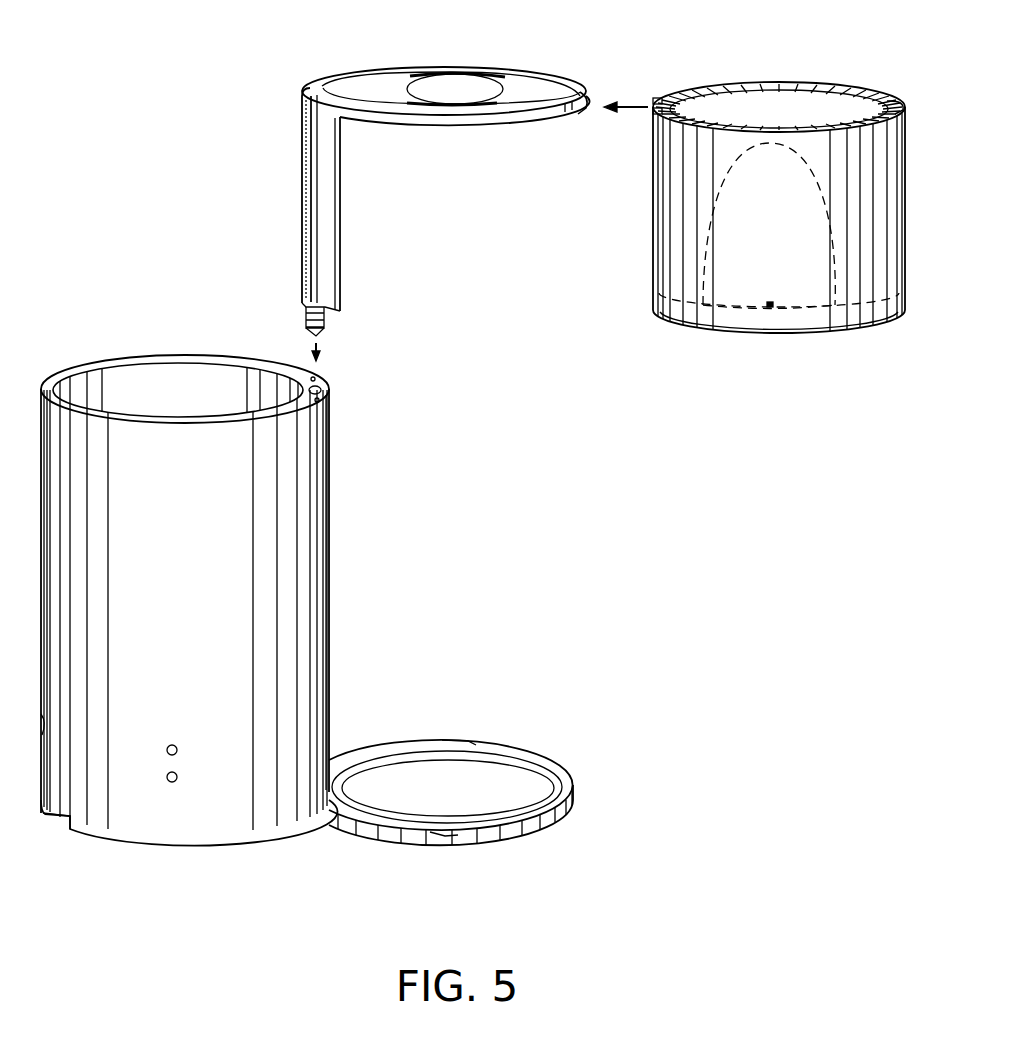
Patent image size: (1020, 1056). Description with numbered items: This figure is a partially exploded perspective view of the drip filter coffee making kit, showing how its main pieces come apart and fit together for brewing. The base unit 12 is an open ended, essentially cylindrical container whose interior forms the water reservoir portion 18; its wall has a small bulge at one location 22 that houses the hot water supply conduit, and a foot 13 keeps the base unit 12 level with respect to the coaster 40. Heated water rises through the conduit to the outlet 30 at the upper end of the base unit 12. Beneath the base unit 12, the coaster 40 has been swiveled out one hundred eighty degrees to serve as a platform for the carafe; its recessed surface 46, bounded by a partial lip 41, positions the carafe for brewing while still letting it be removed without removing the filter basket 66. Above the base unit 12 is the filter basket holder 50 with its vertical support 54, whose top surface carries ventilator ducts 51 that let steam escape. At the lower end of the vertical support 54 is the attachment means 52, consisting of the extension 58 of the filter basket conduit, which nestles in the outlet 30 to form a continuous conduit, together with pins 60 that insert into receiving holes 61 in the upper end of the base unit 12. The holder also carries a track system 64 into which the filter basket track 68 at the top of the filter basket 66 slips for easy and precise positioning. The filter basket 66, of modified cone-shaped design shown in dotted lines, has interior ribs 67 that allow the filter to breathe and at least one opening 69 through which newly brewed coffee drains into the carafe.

The base unit 12 is at (342, 524).
The foot 13 is at (45, 816).
The water reservoir portion 18 is at (152, 378).
The bulge location of wall 22 is at (330, 700).
The outlet 30 is at (333, 383).
The coaster 40 is at (540, 830).
The partial lip 41 is at (433, 826).
The recessed surface 46 is at (487, 775).
The filter basket holder 50 is at (303, 190).
The ventilator ducts 51 is at (377, 80).
The attachment means 52 is at (292, 301).
The vertical support 54 is at (326, 237).
The extension 58 is at (331, 323).
The pins 60 is at (323, 334).
The receiving holes 61 is at (312, 372).
The track system 64 is at (584, 106).
The filter basket 66 is at (640, 210).
The ribs 67 is at (762, 103).
The filter basket track 68 is at (655, 112).
The opening 69 is at (770, 308).